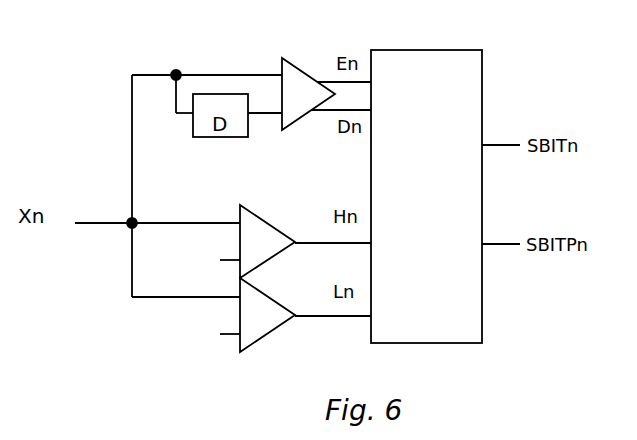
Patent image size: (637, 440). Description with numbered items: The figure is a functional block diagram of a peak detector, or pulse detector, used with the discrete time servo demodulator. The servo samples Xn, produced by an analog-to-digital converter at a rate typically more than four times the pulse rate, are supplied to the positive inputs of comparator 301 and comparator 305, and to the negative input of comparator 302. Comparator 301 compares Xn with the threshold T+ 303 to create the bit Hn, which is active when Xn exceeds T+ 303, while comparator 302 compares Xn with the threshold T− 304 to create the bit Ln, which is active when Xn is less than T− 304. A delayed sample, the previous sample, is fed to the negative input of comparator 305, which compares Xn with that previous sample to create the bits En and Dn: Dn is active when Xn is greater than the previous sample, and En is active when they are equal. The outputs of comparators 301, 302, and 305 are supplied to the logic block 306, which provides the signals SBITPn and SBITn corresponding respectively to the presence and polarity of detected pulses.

The comparator 301 is at (266, 225).
The comparator 302 is at (276, 307).
The threshold T+ 303 is at (201, 270).
The threshold T− 304 is at (201, 341).
The comparator 305 is at (302, 76).
The logic block 306 is at (426, 177).